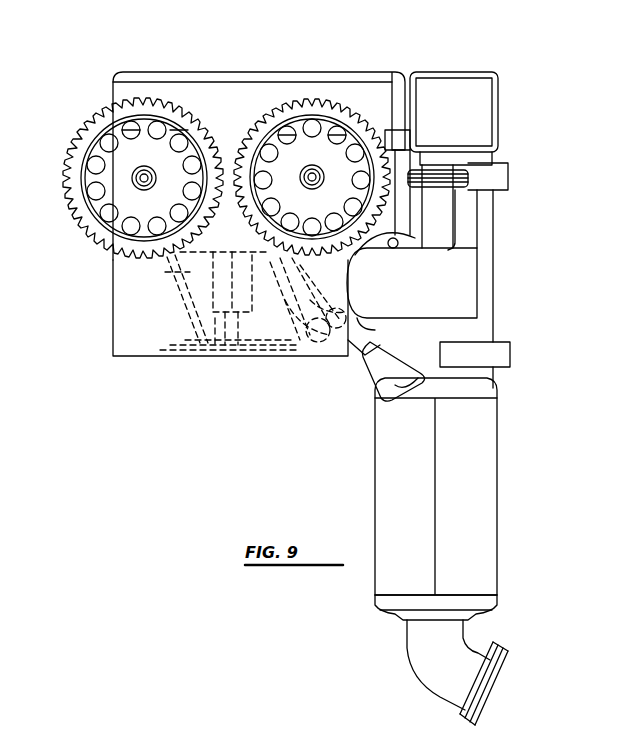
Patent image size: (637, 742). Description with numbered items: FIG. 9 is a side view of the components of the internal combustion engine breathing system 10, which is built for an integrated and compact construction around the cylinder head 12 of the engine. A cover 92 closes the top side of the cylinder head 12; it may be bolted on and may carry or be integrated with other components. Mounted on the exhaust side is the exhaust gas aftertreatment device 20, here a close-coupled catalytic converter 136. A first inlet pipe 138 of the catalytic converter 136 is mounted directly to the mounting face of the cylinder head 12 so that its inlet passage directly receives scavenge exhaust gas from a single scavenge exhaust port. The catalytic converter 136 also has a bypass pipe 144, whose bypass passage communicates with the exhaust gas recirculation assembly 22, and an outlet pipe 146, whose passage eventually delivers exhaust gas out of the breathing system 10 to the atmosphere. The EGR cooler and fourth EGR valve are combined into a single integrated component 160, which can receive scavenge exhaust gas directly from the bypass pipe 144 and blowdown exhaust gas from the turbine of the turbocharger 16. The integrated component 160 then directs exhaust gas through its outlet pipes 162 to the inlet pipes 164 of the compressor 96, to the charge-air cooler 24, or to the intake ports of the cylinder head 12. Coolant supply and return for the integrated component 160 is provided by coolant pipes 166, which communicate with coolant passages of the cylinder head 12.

The internal combustion engine breathing system 10 is at (148, 50).
The cylinder head 12 is at (112, 305).
The turbocharger 16 is at (368, 345).
The exhaust gas aftertreatment device 20 is at (497, 505).
The exhaust gas recirculation assembly 22 is at (503, 107).
The charge-air cooler 24 is at (280, 70).
The cover 92 is at (228, 100).
The compressor 96 is at (355, 345).
The catalytic converter 136 is at (482, 556).
The first inlet pipe 138 is at (385, 372).
The bypass pipe 144 is at (468, 220).
The outlet pipe 146 is at (430, 665).
The integrated component 160 is at (440, 95).
The outlet pipe of integrated component 162 is at (437, 217).
The inlet pipe of compressor 164 is at (452, 287).
The coolant pipe 166 is at (385, 108).